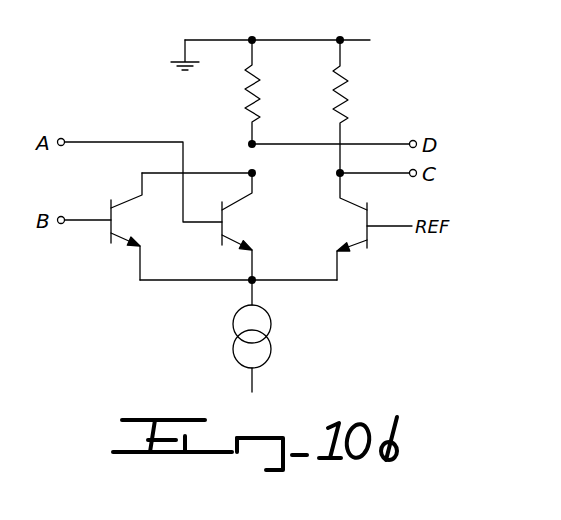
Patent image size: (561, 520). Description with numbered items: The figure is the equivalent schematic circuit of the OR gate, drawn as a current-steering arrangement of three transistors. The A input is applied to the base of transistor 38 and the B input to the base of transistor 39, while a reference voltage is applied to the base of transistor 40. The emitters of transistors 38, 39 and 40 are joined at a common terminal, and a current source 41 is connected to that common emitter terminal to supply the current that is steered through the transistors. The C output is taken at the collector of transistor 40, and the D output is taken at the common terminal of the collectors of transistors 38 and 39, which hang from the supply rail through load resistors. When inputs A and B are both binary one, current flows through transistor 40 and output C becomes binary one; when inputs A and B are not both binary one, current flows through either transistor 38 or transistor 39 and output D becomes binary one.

The transistor 38 is at (231, 235).
The transistor 39 is at (122, 233).
The transistor 40 is at (352, 236).
The current source 41 is at (266, 341).